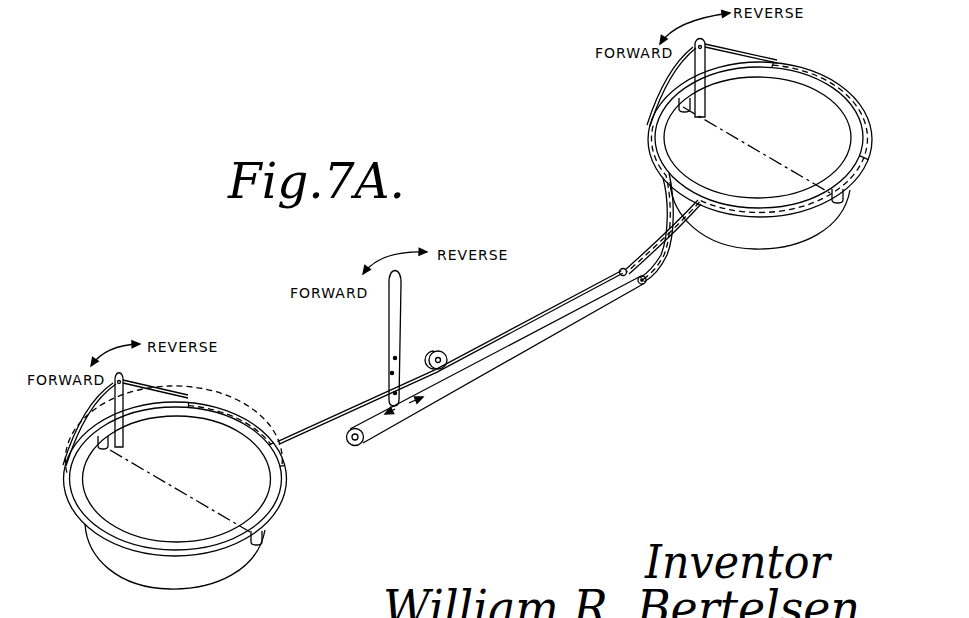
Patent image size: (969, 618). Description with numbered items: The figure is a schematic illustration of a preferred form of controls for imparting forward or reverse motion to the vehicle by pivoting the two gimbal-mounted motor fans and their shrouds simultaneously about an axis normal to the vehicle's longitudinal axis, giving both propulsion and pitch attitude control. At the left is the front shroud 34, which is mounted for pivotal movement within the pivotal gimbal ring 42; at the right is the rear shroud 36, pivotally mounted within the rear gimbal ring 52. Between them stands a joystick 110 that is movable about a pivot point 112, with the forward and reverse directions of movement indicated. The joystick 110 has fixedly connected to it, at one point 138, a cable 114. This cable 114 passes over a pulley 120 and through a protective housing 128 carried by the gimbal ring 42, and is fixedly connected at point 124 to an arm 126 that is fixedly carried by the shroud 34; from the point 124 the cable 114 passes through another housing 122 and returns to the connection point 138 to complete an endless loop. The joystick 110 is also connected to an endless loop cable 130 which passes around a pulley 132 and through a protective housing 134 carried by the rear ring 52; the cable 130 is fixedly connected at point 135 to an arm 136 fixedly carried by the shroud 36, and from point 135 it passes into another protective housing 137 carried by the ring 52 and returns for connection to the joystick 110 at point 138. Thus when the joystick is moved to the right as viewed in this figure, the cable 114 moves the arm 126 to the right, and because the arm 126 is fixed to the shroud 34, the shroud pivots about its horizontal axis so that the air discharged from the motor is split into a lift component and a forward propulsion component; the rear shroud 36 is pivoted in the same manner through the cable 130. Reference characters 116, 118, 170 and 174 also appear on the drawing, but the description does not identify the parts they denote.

The front shroud 34 is at (222, 568).
The rear shroud 36 is at (787, 235).
The gimbal ring 42 is at (268, 512).
The gimbal ring 52 is at (755, 208).
The joystick 110 is at (402, 311).
The pivot point 112 is at (395, 358).
The cable 114 is at (345, 403).
The lower pivot pin 116 is at (388, 378).
The rod attachment pin 118 is at (392, 373).
The pulley 120 is at (447, 351).
The housing 122 is at (290, 483).
The connection point 124 is at (127, 378).
The arm 126 is at (108, 405).
The protective housing 128 is at (235, 408).
The endless loop cable 130 is at (555, 338).
The pulley 132 is at (367, 438).
The protective housing 134 is at (670, 263).
The connection point 135 is at (706, 41).
The arm 136 is at (672, 88).
The protective housing 137 is at (848, 84).
The connection point 138 is at (400, 399).
The element 170 is at (367, 0).
The element 174 is at (424, 0).